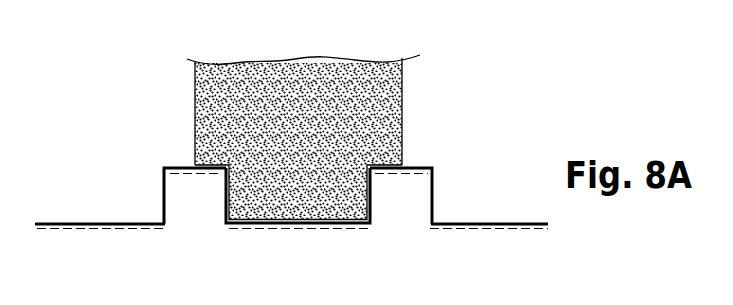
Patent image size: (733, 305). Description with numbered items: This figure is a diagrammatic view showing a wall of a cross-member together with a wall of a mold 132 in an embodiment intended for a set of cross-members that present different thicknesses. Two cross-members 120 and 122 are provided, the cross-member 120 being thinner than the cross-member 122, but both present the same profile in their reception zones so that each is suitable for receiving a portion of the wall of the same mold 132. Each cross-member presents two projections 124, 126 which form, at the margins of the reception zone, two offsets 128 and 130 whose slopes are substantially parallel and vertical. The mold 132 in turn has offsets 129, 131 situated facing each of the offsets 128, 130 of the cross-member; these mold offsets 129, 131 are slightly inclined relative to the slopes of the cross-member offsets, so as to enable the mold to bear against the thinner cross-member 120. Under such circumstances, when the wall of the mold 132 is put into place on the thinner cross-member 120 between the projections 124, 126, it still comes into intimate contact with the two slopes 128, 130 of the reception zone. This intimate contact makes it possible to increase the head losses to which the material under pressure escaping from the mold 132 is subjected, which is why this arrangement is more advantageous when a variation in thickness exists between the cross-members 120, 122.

The cross-member 120 is at (523, 229).
The cross-member 122 is at (502, 223).
The projection 124 is at (190, 207).
The projection 126 is at (417, 215).
The offset 128 is at (368, 186).
The offset 129 is at (374, 197).
The offset 130 is at (226, 184).
The offset 131 is at (221, 197).
The mold 132 is at (396, 86).